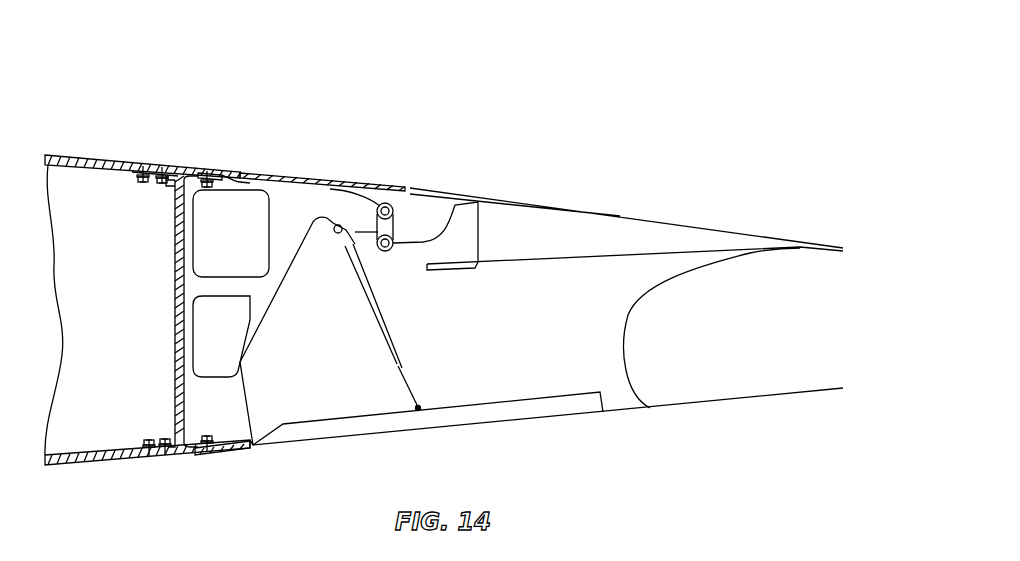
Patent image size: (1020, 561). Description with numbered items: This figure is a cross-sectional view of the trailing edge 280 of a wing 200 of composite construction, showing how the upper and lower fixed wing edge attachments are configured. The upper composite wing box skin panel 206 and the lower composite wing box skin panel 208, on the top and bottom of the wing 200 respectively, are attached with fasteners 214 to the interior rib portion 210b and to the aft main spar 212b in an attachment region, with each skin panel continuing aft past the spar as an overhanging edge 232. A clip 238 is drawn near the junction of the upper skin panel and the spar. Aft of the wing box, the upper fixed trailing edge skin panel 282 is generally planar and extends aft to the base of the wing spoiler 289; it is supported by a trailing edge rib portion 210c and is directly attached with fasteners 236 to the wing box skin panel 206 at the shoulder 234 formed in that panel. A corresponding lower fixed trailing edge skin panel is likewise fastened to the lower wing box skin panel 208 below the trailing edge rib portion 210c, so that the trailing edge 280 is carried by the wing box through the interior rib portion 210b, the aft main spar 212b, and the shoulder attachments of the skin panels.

The wing 200 is at (247, 80).
The upper composite wing box skin panel 206 is at (85, 153).
The lower composite wing box skin panel 208 is at (97, 463).
The interior rib portion 210b is at (126, 250).
The trailing edge rib portion 210c is at (283, 265).
The aft main spar 212b is at (175, 288).
The fasteners 214 is at (158, 185).
The overhanging edge 232 is at (240, 178).
The shoulder 234 is at (212, 171).
The fasteners 236 is at (207, 192).
The clip 238 is at (176, 172).
The trailing edge 280 is at (403, 172).
The upper fixed trailing edge skin panel 282 is at (264, 184).
The wing spoiler 289 is at (545, 232).